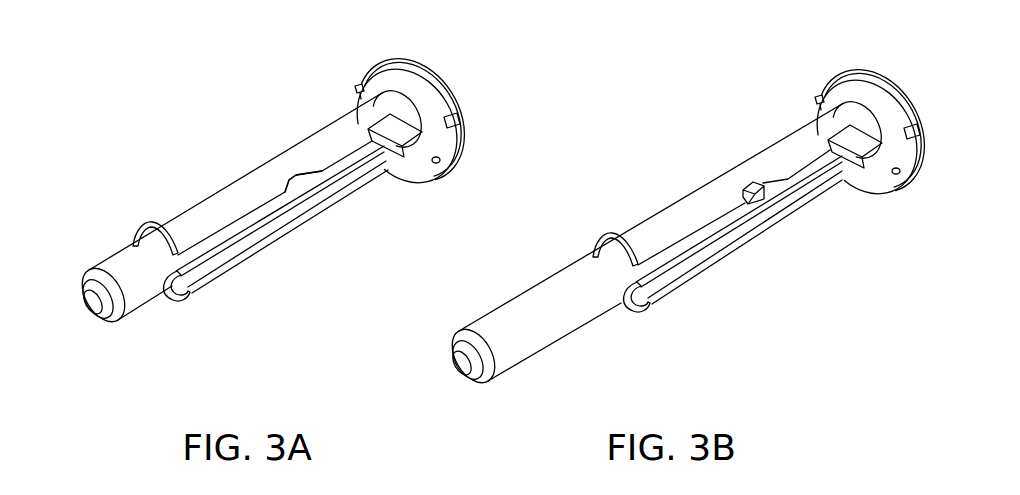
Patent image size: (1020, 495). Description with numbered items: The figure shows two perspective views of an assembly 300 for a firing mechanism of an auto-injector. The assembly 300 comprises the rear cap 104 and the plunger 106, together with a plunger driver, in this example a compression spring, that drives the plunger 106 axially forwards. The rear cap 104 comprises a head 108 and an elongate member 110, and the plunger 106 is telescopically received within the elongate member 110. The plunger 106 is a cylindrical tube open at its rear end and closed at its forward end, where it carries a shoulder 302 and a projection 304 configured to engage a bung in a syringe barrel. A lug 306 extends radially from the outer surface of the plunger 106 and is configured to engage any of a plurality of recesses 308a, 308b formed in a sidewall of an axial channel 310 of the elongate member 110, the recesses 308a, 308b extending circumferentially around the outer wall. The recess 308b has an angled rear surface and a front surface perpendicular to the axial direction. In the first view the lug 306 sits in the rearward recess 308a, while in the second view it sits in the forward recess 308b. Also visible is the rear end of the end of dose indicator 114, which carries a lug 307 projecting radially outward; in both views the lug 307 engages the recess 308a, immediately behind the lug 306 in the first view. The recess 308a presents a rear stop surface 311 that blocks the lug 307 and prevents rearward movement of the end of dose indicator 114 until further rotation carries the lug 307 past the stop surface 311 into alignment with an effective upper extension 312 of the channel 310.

The assembly 300 is at (266, 96).
The rear cap 104 is at (388, 198).
The plunger 106 is at (121, 254).
The head 108 is at (448, 79).
The elongate member 110 is at (297, 230).
The end of dose indicator 114 is at (421, 170).
The shoulder 302 is at (110, 320).
The projection 304 is at (80, 305).
The lug 306 is at (387, 120).
The lug 307 is at (461, 124).
The rearward recess 308a is at (354, 108).
The forward recess 308b is at (287, 180).
The axial channel 310 is at (215, 247).
The rear stop surface 311 is at (464, 143).
The upper extension 312 is at (448, 168).